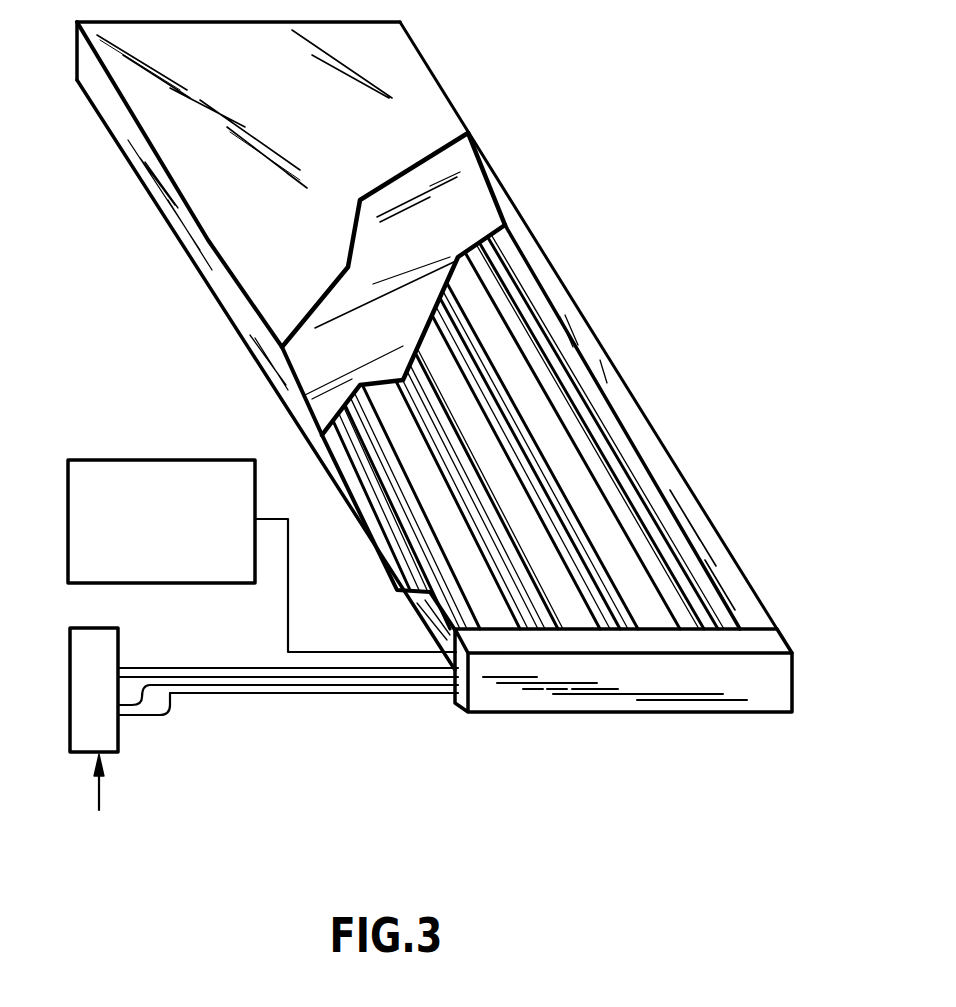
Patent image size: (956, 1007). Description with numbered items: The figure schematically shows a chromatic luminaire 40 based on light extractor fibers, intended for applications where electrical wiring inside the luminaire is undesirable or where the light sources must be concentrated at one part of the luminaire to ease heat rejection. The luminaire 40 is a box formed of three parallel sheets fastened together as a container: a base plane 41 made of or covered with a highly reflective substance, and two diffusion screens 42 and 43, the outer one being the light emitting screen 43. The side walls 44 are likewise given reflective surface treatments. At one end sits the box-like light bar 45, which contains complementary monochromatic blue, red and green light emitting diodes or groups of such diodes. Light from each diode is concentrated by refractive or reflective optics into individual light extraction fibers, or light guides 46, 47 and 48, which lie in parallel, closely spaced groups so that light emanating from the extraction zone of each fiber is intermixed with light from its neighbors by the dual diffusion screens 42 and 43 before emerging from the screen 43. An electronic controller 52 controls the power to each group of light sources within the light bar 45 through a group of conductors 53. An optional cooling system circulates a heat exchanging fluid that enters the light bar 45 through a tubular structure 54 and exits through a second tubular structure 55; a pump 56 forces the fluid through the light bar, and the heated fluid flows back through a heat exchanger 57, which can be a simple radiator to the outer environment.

The luminaire 40 is at (160, 268).
The base plane 41 is at (410, 488).
The diffusion screen 42 is at (442, 203).
The light emitting screen 43 is at (393, 125).
The side walls 44 is at (633, 410).
The light bar 45 is at (770, 690).
The light extraction fiber 46 is at (462, 337).
The light extraction fiber 47 is at (472, 382).
The light extraction fiber 48 is at (500, 457).
The electronic controller 52 is at (68, 490).
The group of conductors 53 is at (275, 512).
The tubular structure 54 is at (237, 673).
The second tubular structure 55 is at (383, 696).
The pump 56 is at (160, 707).
The heat exchanger 57 is at (72, 680).